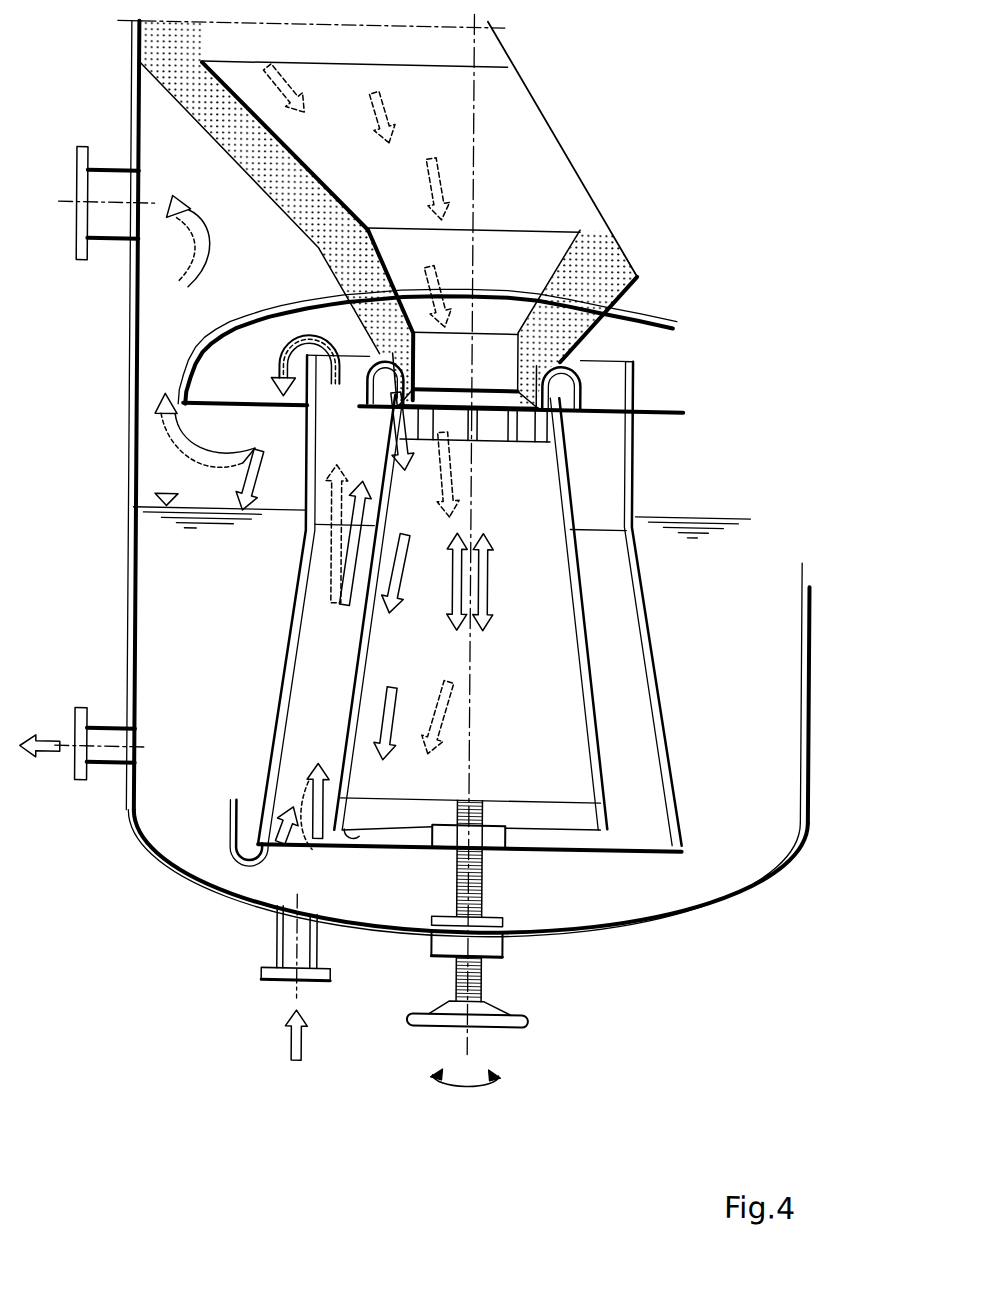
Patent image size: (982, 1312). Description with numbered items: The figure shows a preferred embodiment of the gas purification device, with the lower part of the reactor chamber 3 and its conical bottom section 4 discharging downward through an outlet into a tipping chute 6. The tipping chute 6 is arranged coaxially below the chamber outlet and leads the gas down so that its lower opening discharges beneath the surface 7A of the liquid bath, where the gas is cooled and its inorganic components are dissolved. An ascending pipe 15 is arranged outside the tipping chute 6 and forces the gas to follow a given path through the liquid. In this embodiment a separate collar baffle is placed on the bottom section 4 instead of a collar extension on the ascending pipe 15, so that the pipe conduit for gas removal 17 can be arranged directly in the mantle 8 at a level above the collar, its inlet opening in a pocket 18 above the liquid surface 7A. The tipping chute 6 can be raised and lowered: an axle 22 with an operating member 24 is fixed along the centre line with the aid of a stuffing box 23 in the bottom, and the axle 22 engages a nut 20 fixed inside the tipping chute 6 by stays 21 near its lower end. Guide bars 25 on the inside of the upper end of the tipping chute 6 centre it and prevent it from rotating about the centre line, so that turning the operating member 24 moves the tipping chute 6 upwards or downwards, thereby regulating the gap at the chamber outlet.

The reactor chamber 3 is at (463, 101).
The bottom section of the reactor chamber 4 is at (579, 217).
The tipping chute 6 is at (581, 586).
The surface of the liquid bath 7A is at (160, 486).
The mantle 8 is at (132, 424).
The ascending pipe 15 is at (297, 611).
The pipe conduit for gas removal 17 is at (114, 218).
The pocket 18 is at (192, 358).
The nut 20 is at (494, 830).
The stays 21 is at (579, 812).
The axle 22 is at (486, 877).
The stuffing box 23 is at (500, 933).
The operating member 24 is at (524, 1010).
The guide bars 25 is at (546, 417).